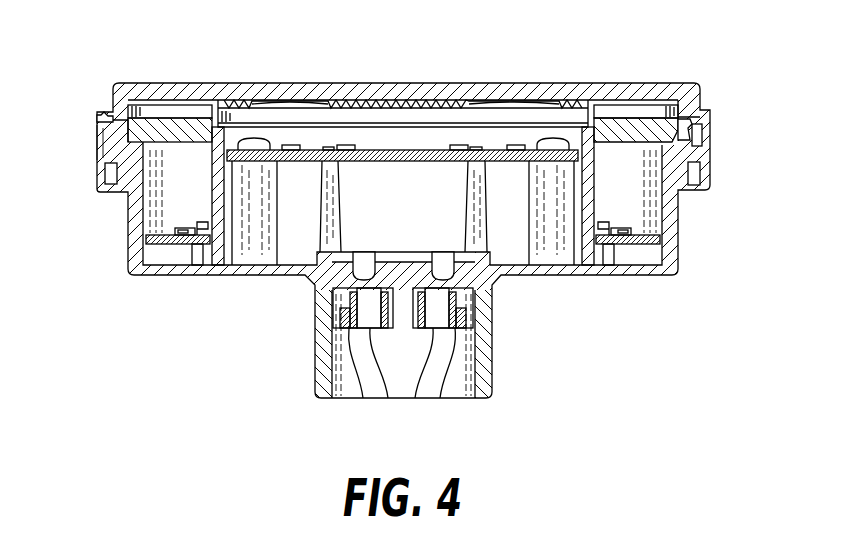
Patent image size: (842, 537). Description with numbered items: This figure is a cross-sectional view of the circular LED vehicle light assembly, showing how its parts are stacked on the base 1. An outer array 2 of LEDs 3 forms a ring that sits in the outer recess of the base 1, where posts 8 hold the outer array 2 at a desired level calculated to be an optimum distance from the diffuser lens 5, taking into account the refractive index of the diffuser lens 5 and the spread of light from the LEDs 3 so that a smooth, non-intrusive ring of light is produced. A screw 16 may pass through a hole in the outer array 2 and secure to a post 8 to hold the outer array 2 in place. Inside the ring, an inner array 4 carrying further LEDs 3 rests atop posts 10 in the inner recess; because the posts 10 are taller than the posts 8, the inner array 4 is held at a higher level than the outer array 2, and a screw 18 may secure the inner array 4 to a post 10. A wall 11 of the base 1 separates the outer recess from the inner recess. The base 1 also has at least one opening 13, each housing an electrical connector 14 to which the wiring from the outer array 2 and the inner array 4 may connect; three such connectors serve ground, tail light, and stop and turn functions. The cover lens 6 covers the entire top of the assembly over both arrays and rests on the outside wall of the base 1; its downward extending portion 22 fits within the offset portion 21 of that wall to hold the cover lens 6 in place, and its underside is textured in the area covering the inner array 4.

The base 1 is at (673, 247).
The outer array 2 is at (172, 245).
The LEDs 3 is at (292, 146).
The inner array 4 is at (437, 150).
The diffuser lens 5 is at (180, 120).
The cover lens 6 is at (582, 97).
The posts 8 is at (198, 248).
The posts 10 is at (250, 240).
The wall 11 is at (592, 176).
The opening 13 is at (420, 398).
The electrical connector 14 is at (352, 400).
The screw 16 is at (203, 225).
The screw 18 is at (264, 146).
The offset portion 21 is at (100, 126).
The downward extending portion 22 is at (108, 117).